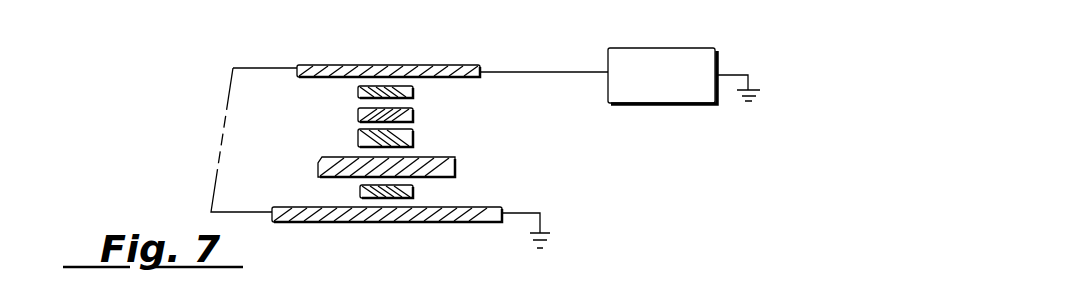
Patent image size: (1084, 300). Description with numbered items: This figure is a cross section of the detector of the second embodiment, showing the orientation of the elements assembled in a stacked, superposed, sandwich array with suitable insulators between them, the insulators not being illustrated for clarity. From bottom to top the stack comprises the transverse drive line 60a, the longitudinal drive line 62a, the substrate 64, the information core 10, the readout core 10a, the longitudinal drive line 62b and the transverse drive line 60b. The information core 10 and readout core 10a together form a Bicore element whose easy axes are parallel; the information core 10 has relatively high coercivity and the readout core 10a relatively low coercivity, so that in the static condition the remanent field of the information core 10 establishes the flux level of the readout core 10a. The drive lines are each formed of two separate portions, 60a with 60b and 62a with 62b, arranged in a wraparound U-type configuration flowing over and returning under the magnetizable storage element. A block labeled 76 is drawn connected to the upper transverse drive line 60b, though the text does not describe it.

The transverse drive line 60b is at (450, 65).
The longitudinal drive line 62b is at (413, 93).
The readout core 10a is at (358, 117).
The information core 10 is at (413, 135).
The substrate 64 is at (455, 161).
The longitudinal drive line 62a is at (413, 194).
The transverse drive line 60a is at (441, 222).
The high-tension source HT 76 is at (680, 48).